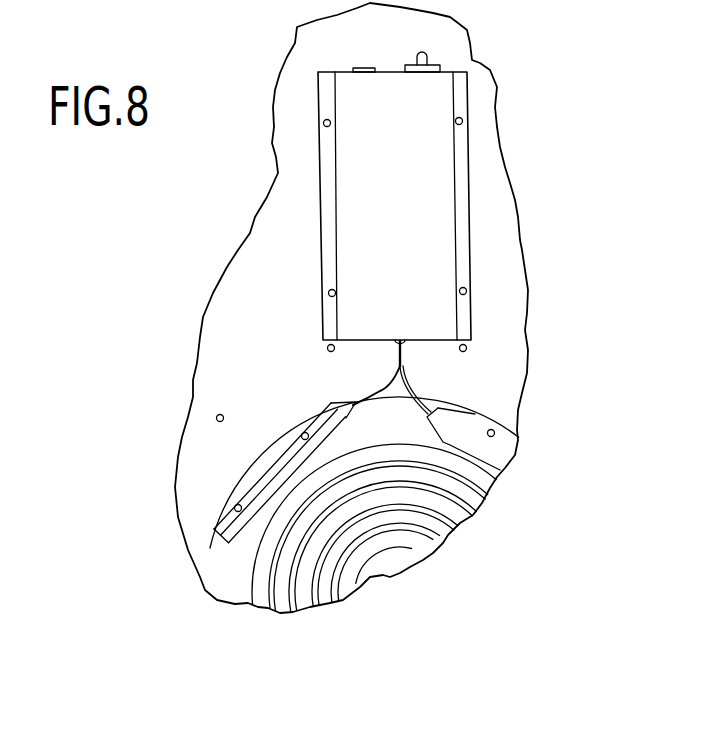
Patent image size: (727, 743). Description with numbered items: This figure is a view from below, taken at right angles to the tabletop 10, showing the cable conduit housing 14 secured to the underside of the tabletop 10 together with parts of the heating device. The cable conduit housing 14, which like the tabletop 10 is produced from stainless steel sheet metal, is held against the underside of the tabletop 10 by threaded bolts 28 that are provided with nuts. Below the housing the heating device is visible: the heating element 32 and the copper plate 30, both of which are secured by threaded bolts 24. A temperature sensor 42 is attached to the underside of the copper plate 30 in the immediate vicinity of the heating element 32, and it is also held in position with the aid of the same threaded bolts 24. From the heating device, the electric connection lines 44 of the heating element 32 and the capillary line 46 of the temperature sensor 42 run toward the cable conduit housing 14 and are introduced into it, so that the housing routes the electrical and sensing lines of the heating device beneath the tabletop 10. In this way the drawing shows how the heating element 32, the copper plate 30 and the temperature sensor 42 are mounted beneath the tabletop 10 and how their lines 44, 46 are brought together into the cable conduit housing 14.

The tabletop 10 is at (518, 308).
The cable conduit housing 14 is at (491, 229).
The threaded bolts 24 is at (301, 433).
The threaded bolts 28 is at (461, 118).
The copper plate 30 is at (472, 408).
The heating element 32 is at (484, 478).
The temperature sensor 42 is at (243, 557).
The electric connection lines 44 is at (410, 381).
The capillary line 46 is at (382, 391).